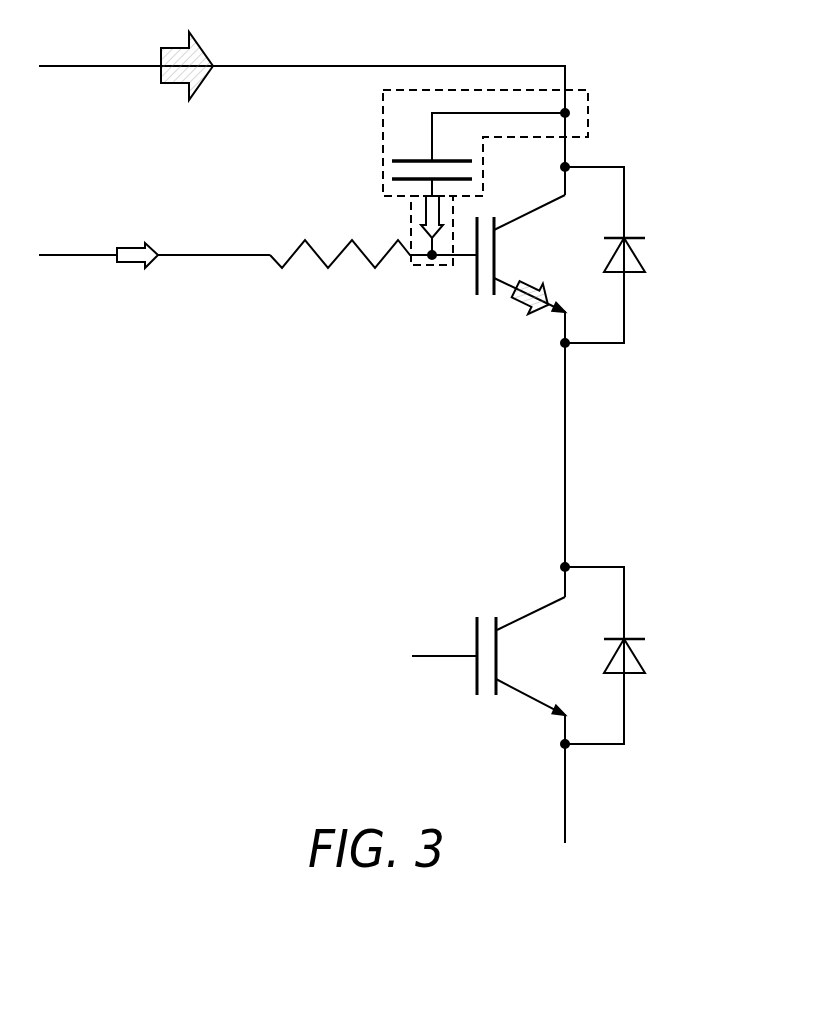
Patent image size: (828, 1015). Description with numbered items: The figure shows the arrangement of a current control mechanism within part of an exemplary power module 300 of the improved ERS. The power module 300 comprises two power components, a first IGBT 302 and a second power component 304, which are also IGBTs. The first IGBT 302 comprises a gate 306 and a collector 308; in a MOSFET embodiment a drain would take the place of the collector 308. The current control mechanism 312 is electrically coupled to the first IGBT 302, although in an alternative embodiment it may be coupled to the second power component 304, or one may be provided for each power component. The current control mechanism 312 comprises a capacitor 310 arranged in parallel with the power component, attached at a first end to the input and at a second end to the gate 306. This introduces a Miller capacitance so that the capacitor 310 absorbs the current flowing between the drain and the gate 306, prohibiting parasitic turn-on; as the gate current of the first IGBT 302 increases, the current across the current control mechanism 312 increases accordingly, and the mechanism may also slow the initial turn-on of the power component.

The power module 300 is at (193, 530).
The first IGBT 302 is at (625, 180).
The second power component 304 is at (625, 580).
The gate 306 is at (477, 283).
The collector 308 is at (568, 165).
The capacitor 310 is at (404, 160).
The current control mechanism 312 is at (403, 88).